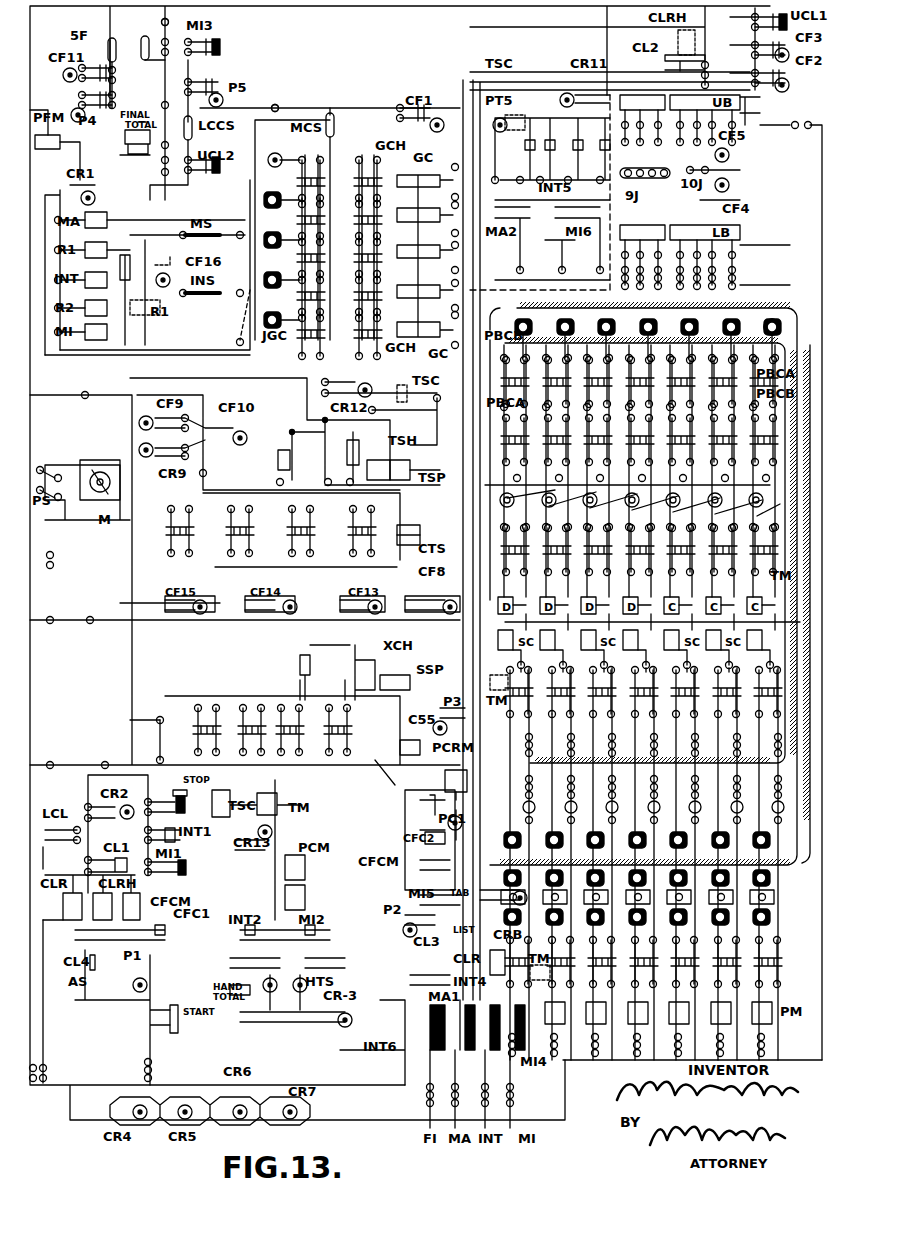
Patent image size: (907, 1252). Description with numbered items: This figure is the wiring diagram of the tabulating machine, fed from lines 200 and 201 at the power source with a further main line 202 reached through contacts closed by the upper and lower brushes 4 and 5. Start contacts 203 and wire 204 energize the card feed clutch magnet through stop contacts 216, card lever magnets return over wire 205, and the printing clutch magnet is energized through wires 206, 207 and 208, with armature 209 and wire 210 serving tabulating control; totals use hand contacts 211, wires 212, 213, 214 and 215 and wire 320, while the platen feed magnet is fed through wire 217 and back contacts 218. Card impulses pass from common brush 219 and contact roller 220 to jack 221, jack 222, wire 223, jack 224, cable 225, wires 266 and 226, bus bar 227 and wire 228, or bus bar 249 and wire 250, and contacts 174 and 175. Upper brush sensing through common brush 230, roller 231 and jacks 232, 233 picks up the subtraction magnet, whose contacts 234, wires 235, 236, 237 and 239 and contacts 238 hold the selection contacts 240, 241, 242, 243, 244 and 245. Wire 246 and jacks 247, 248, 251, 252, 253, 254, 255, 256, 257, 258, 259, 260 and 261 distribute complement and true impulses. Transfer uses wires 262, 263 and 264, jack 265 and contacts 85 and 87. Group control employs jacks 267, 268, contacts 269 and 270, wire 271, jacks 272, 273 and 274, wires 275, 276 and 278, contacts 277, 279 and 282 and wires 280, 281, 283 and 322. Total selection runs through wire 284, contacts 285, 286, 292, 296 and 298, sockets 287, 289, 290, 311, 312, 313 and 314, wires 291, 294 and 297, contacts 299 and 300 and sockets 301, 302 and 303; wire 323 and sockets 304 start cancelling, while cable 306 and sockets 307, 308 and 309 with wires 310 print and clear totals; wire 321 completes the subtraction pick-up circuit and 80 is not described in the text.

The line 200 is at (105, 668).
The line 201 is at (37, 552).
The main line 202 is at (584, 629).
The start key contacts 203 is at (176, 1041).
The wire 204 is at (146, 1049).
The wire 205 is at (42, 1049).
The wire 206 is at (290, 822).
The wire 207 is at (405, 880).
The wire 208 is at (405, 990).
The armature 209 is at (451, 799).
The wire 210 is at (492, 357).
The hand key contacts 211 is at (281, 1021).
The wire 212 is at (290, 887).
The wire 213 is at (320, 958).
The wire 214 is at (236, 996).
The wire 215 is at (366, 981).
The stop key contacts 216 is at (163, 778).
The wire 217 is at (130, 506).
The back contacts 218 is at (151, 135).
The common brush 219 is at (776, 242).
The contact roller 220 is at (663, 208).
The jack 221 is at (746, 274).
The jack 222 is at (794, 811).
The wire 223 is at (801, 918).
The jack 224 is at (794, 793).
The cable 225 is at (786, 552).
The wire 226 is at (602, 510).
The bus bar 227 is at (529, 604).
The wire 228 is at (658, 1015).
The common brush 230 is at (776, 113).
The contact roller 231 is at (645, 95).
The jack 232 is at (648, 153).
The jack 233 is at (431, 628).
The contacts 234 is at (316, 638).
The wire 235 is at (90, 622).
The wire 236 is at (305, 593).
The wire 237 is at (786, 96).
The contacts 238 is at (316, 664).
The wire 239 is at (99, 751).
The subtraction selection contacts 240 is at (186, 711).
The subtraction selection contacts 241 is at (181, 696).
The subtraction selection contacts 242 is at (239, 711).
The subtraction selection contacts 243 is at (348, 711).
The subtraction selection contacts 244 is at (370, 723).
The subtraction selection contacts 245 is at (401, 776).
The wire 246 is at (729, 63).
The jack 247 is at (361, 776).
The jack 248 is at (407, 682).
The bus bar 249 is at (773, 604).
The wire 250 is at (773, 641).
The jack 251 is at (350, 765).
The jack 252 is at (359, 686).
The jack 253 is at (765, 748).
The jack 254 is at (226, 746).
The jack 255 is at (201, 684).
The jack 256 is at (181, 757).
The jack 257 is at (239, 688).
The jack 258 is at (293, 711).
The jack 259 is at (306, 773).
The jack 260 is at (321, 686).
The jack 261 is at (794, 831).
The wire 262 is at (99, 401).
The wire 263 is at (336, 484).
The wire 264 is at (657, 395).
The jack 265 is at (683, 288).
The wire 266 is at (621, 475).
The jack 267 is at (452, 197).
The jack 268 is at (452, 234).
The contacts 269 is at (361, 349).
The group control contact 270 is at (308, 349).
The wire 271 is at (259, 349).
The jack 272 is at (238, 247).
The jack 273 is at (241, 280).
The jack 274 is at (226, 313).
The wire 275 is at (73, 345).
The wire 276 is at (193, 327).
The contacts 277 is at (141, 335).
The wire 278 is at (245, 204).
The contacts 279 is at (118, 207).
The wire 280 is at (213, 185).
The wire 281 is at (281, 101).
The contacts 282 is at (125, 152).
The wire 283 is at (165, 22).
The wire 284 is at (270, 888).
The contacts 285 is at (508, 153).
The contacts 286 is at (419, 416).
The plug socket 287 is at (521, 188).
The socket 289 is at (621, 471).
The socket 290 is at (381, 373).
The wire 291 is at (235, 380).
The contacts 292 is at (346, 446).
The wire 294 is at (346, 426).
The contacts 296 is at (276, 436).
The wire 297 is at (146, 564).
The contacts 298 is at (130, 715).
The contacts 299 is at (329, 538).
The contacts 300 is at (379, 541).
The plug socket 301 is at (360, 565).
The plug socket 302 is at (331, 514).
The plug socket 303 is at (421, 516).
The sockets 304 is at (739, 516).
The cable 306 is at (808, 581).
The plug sockets 307 is at (791, 889).
The plug sockets 308 is at (801, 904).
The plug sockets 309 is at (794, 848).
The wires 310 is at (749, 826).
The socket 311 is at (494, 188).
The socket 312 is at (501, 278).
The socket 313 is at (536, 278).
The socket 314 is at (579, 278).
The wire 320 is at (328, 1052).
The wire 321 is at (565, 28).
The wire 322 is at (351, 23).
The wire 323 is at (563, 426).
The upper brushes 4 is at (667, 127).
The lower brushes 5 is at (667, 259).
The contact 80 is at (782, 408).
The contacts 85 is at (630, 421).
The contact 87 is at (652, 421).
The contacts 174 is at (644, 769).
The contacts 175 is at (645, 772).